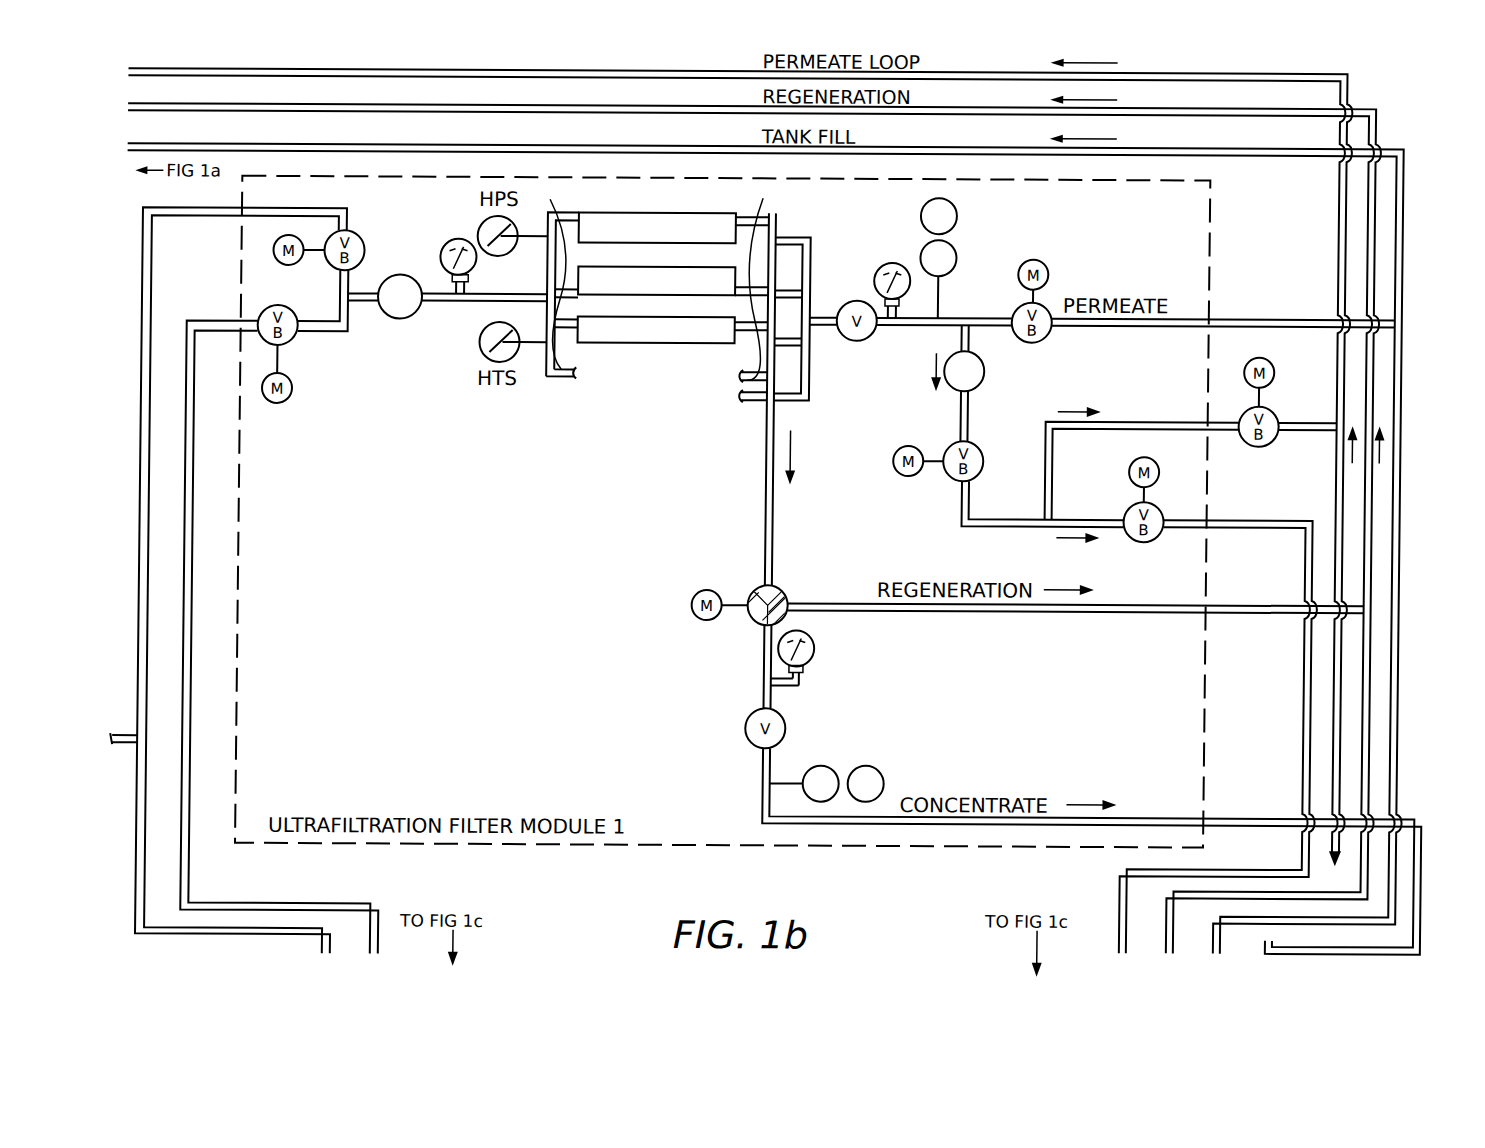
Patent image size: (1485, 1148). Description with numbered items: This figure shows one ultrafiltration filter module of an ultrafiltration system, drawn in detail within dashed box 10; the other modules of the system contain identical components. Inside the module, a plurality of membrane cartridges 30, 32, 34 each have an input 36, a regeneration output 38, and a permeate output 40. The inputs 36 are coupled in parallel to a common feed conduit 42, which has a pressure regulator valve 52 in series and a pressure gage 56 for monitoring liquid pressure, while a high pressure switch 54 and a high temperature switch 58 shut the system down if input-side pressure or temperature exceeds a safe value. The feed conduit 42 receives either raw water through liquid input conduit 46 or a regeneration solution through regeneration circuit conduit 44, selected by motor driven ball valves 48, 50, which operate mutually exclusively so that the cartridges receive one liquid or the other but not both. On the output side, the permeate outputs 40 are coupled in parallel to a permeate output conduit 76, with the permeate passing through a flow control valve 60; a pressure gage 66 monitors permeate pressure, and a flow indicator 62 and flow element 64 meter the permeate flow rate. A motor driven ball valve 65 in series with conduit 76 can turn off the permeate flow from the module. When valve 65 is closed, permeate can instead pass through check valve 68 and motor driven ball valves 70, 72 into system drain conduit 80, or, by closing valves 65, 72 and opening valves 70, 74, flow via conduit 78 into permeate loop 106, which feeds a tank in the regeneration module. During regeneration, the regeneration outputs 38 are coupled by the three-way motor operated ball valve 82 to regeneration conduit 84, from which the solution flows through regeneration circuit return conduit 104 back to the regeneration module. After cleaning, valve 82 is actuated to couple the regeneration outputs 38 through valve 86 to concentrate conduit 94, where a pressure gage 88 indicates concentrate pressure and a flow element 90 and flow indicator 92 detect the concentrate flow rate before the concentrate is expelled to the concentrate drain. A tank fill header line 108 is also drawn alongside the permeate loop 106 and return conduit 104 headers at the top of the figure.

The ultrafiltration filter module 10 is at (240, 272).
The membrane cartridge 30 is at (660, 236).
The membrane cartridge 32 is at (710, 268).
The membrane cartridge 34 is at (685, 338).
The input 36 is at (554, 279).
The regeneration output 38 is at (755, 382).
The permeate output 40 is at (790, 337).
The feed conduit 42 is at (358, 328).
The regeneration circuit conduit 44 is at (152, 711).
The liquid input conduit 46 is at (200, 602).
The motor driven ball valve 48 is at (296, 343).
The motor driven ball valve 50 is at (358, 240).
The pressure regulator valve 52 is at (412, 312).
The high pressure switch 54 is at (506, 258).
The pressure gage 56 is at (448, 242).
The high temperature switch 58 is at (480, 358).
The flow control valve 60 is at (860, 342).
The flow indicator 62 is at (957, 216).
The flow element 64 is at (957, 258).
The motor driven ball valve 65 is at (1048, 302).
The pressure gage 66 is at (891, 262).
The check valve 68 is at (985, 374).
The motor driven ball valve 70 is at (985, 460).
The motor driven ball valve 72 is at (1150, 540).
The motor driven ball valve 74 is at (1278, 412).
The permeate output conduit 76 is at (1270, 320).
The conduit 78 is at (1125, 420).
The system drain conduit 80 is at (1307, 552).
The three-way motor operated ball valve 82 is at (790, 592).
The regeneration conduit 84 is at (1022, 612).
The valve 86 is at (792, 728).
The pressure gage 88 is at (818, 650).
The flow element 90 is at (838, 772).
The flow indicator 92 is at (883, 772).
The concentrate conduit 94 is at (1274, 940).
The regeneration circuit return conduit 104 is at (187, 107).
The permeate loop 106 is at (186, 70).
The tank fill header line 108 is at (187, 147).